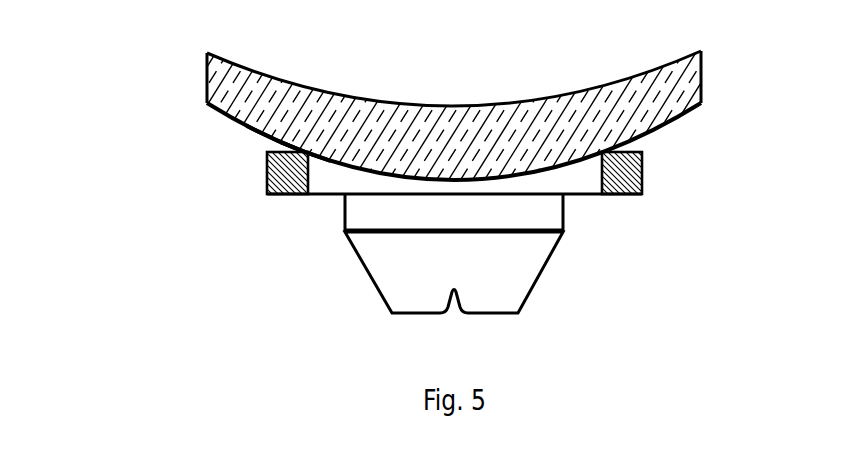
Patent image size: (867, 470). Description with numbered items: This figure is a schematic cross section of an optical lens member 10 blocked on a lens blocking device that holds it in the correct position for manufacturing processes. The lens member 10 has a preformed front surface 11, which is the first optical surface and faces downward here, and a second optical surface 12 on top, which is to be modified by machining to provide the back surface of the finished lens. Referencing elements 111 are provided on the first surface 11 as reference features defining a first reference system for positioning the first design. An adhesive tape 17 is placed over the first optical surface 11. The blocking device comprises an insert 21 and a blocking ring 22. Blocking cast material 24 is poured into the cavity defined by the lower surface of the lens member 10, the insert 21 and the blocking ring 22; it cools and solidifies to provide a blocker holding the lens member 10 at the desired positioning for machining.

The optical lens member 10 is at (699, 77).
The second optical surface 12 is at (613, 82).
The referencing elements 111 is at (679, 115).
The adhesive tape 17 is at (266, 137).
The preformed front surface 11 is at (297, 141).
The blocking ring 22 is at (632, 178).
The blocking cast material 24 is at (332, 177).
The insert 21 is at (515, 259).